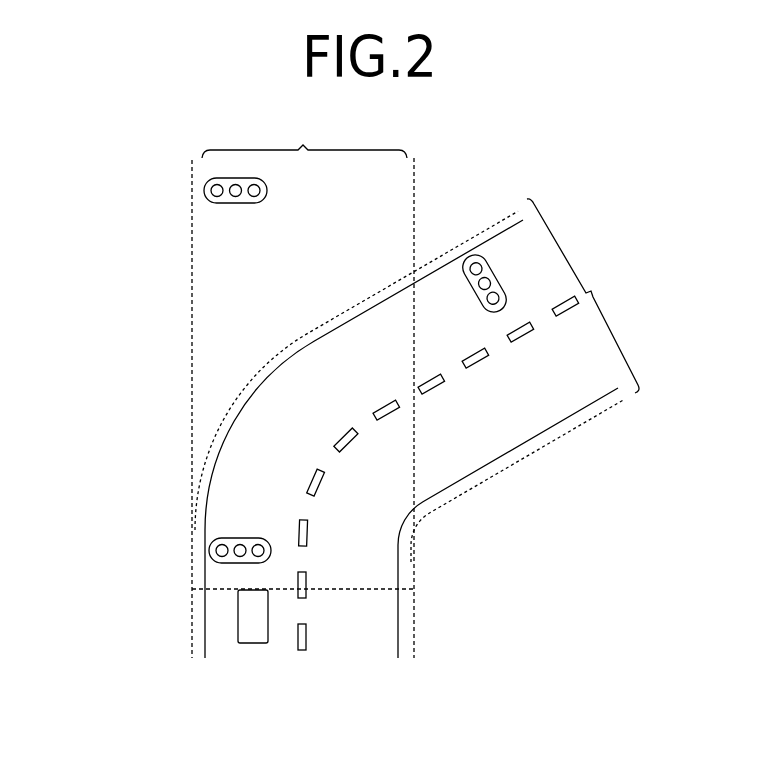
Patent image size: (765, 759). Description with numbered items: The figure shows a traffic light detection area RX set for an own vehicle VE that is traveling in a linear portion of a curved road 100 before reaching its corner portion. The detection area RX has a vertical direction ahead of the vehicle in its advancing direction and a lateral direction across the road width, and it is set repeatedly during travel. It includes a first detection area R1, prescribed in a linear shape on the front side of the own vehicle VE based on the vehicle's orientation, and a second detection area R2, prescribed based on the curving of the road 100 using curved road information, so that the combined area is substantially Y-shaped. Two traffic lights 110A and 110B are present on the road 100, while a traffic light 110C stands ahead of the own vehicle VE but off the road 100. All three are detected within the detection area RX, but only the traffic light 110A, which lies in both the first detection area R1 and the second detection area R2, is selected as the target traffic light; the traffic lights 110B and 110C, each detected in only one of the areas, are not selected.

The road 100 is at (382, 568).
The traffic light 110A is at (218, 540).
The traffic light 110B is at (488, 265).
The traffic light 110C is at (229, 203).
The traffic light detection area RX is at (184, 183).
The first detection area R1 is at (304, 136).
The second detection area R2 is at (583, 296).
The own vehicle VE is at (268, 633).